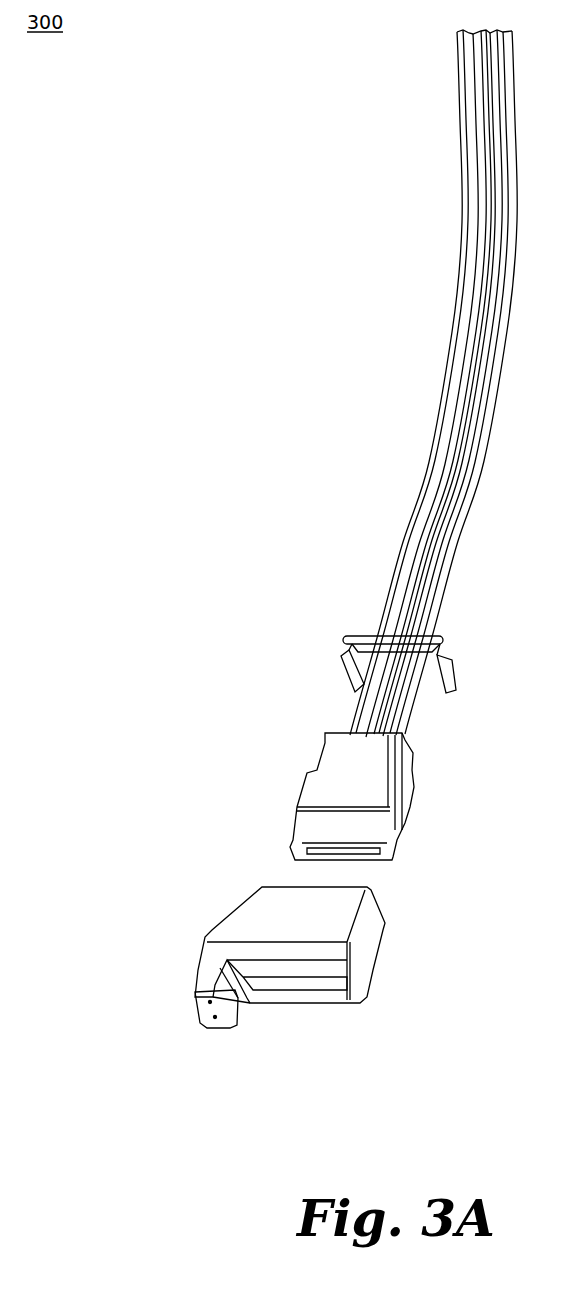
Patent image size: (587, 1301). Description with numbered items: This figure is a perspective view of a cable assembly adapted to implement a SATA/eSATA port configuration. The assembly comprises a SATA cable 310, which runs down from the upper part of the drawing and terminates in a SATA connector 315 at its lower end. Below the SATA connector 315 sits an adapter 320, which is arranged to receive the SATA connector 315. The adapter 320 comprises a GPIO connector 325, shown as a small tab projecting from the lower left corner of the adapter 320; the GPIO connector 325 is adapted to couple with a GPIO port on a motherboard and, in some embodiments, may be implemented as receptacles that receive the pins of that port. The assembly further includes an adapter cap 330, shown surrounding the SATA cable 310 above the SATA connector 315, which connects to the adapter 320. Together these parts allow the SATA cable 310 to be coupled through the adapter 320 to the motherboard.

The SATA cable 310 is at (449, 391).
The SATA connector 315 is at (345, 787).
The adapter 320 is at (277, 908).
The GPIO connector 325 is at (207, 1004).
The adapter cap 330 is at (345, 650).